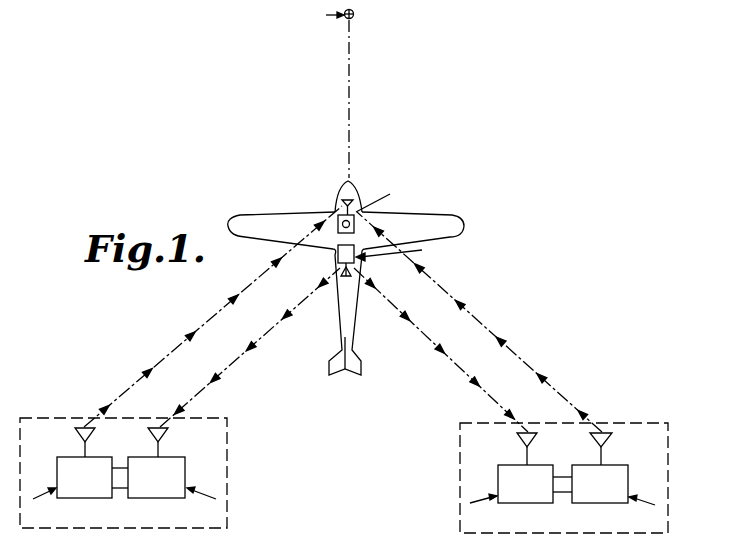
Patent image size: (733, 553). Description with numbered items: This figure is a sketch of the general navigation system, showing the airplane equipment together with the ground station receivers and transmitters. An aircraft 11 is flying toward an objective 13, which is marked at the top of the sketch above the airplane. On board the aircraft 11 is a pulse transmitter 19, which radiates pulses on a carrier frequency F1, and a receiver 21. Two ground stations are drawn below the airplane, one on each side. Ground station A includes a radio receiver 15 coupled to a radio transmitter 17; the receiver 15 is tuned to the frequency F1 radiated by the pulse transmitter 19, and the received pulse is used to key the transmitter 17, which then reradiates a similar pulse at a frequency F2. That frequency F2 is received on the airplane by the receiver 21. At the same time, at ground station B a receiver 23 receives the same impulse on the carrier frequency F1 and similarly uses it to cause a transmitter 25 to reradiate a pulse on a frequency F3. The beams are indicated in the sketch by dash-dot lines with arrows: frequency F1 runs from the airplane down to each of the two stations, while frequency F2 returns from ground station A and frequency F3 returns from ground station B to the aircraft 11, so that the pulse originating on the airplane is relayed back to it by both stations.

The aircraft 11 is at (280, 216).
The objective 13 is at (355, 18).
The radio receiver 15 is at (200, 452).
The radio transmitter 17 is at (57, 458).
The pulse transmitter 19 is at (337, 254).
The receiver 21 is at (356, 228).
The receiver 23 is at (498, 463).
The transmitter 25 is at (612, 466).
The ground station A is at (227, 447).
The ground station B is at (668, 436).
The frequency F1 is at (344, 350).
The frequency F2 is at (213, 316).
The frequency F3 is at (479, 322).